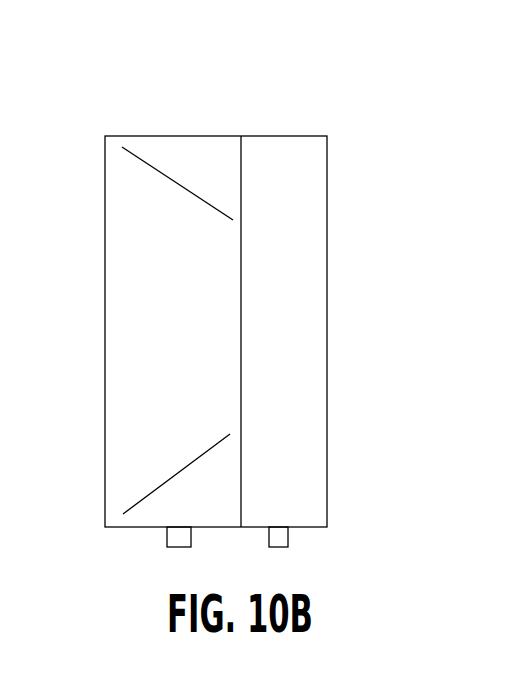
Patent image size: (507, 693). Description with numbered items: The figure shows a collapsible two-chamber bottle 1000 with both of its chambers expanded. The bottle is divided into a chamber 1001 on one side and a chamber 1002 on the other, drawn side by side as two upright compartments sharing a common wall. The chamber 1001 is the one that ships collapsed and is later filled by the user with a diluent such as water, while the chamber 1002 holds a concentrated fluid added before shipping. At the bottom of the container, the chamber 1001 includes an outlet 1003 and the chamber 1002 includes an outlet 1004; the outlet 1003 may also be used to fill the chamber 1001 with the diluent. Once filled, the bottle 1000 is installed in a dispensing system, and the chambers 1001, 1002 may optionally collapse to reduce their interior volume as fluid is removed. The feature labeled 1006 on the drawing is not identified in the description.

The collapsible two-chamber bottle 1000 is at (362, 118).
The chamber 1001 is at (105, 347).
The chamber 1002 is at (327, 262).
The outlet 1003 is at (167, 536).
The outlet 1004 is at (288, 535).
The reflector strip 1006 is at (171, 178).